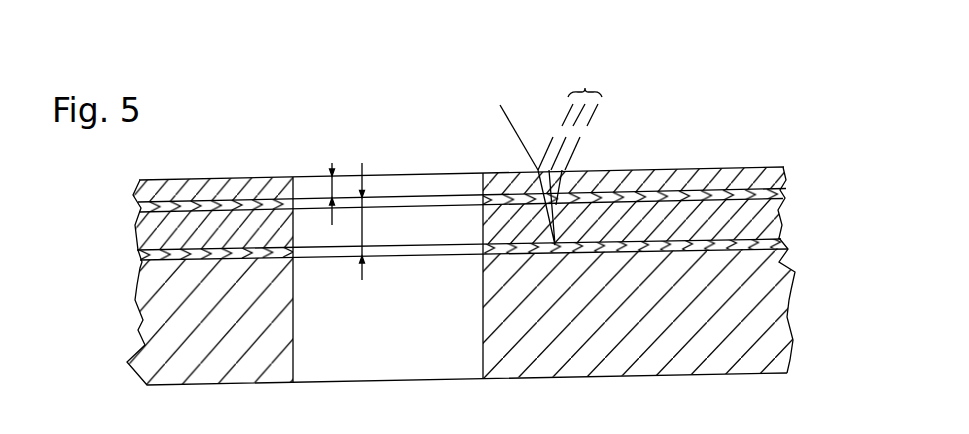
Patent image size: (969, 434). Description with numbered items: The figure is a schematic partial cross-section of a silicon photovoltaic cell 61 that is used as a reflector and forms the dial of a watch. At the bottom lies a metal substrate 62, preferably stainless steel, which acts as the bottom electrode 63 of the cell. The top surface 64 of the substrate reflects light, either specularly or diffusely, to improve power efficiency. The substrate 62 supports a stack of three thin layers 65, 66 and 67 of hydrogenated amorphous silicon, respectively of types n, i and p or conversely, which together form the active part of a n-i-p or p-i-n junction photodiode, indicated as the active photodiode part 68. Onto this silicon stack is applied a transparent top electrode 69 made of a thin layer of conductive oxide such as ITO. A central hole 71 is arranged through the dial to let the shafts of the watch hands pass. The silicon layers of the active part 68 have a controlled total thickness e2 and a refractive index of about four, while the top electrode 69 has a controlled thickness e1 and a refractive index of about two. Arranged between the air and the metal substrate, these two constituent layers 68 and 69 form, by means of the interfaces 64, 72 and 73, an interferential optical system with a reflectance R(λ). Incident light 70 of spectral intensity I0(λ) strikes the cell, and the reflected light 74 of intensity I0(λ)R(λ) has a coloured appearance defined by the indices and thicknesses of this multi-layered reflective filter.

The photovoltaic cell 61 is at (652, 84).
The metal substrate 62 is at (781, 342).
The bottom electrode 63 is at (471, 276).
The top surface of the substrate 64 is at (796, 272).
The first thin semiconductor layer 65 is at (457, 253).
The second thin semiconductor layer 66 is at (430, 228).
The third thin semiconductor layer 67 is at (405, 202).
The active photodiode part 68 is at (795, 190).
The transparent top electrode 69 is at (773, 183).
The incident light 70 is at (532, 165).
The central hole 71 is at (373, 370).
The interface 72 is at (733, 186).
The interface 73 is at (695, 166).
The reflected light 74 is at (576, 153).